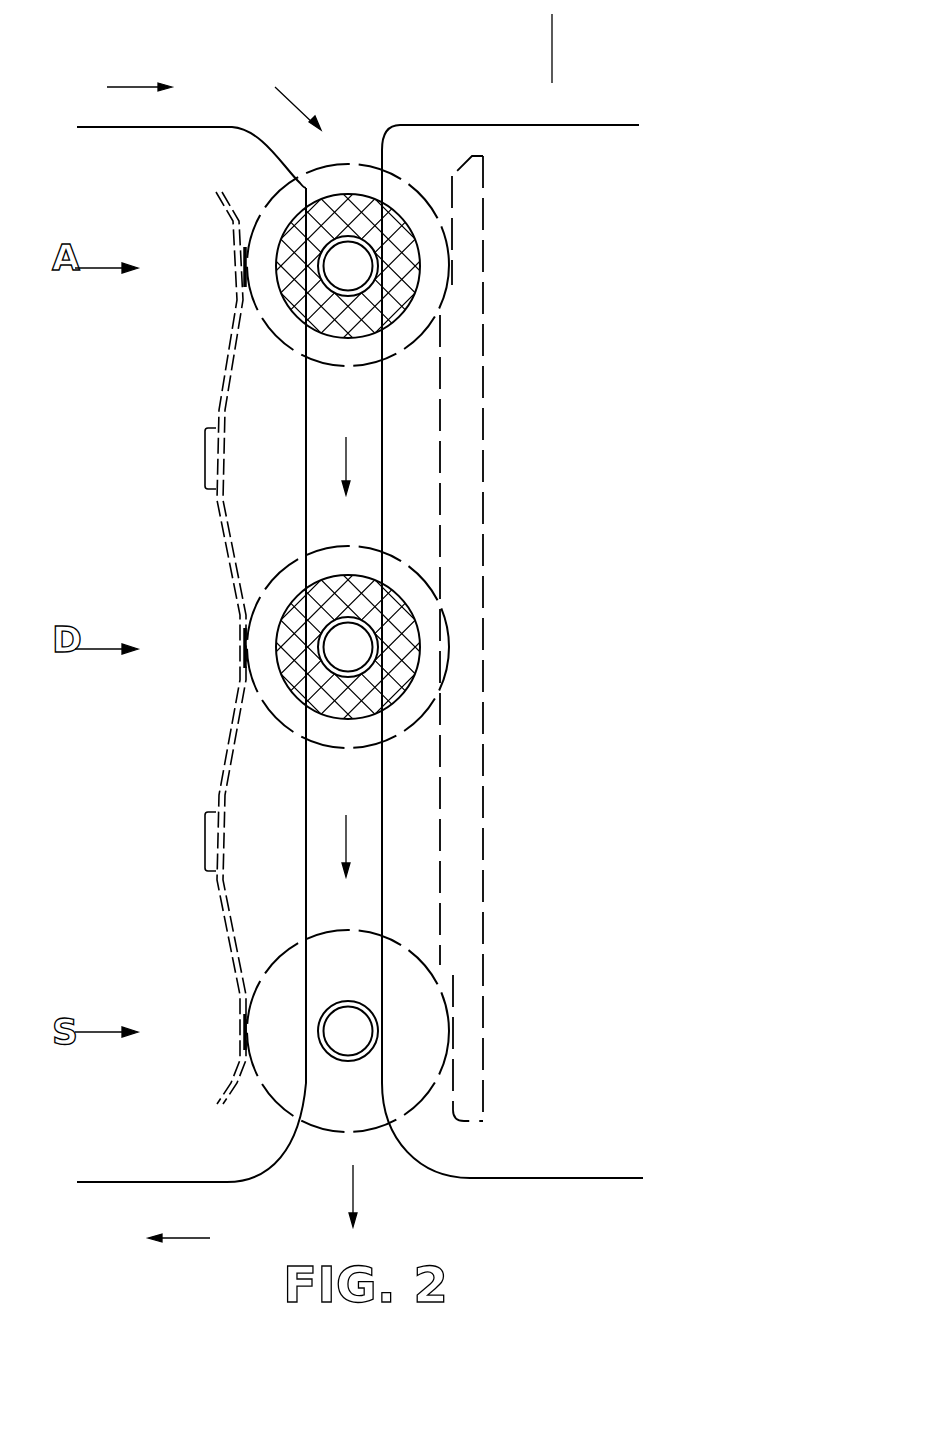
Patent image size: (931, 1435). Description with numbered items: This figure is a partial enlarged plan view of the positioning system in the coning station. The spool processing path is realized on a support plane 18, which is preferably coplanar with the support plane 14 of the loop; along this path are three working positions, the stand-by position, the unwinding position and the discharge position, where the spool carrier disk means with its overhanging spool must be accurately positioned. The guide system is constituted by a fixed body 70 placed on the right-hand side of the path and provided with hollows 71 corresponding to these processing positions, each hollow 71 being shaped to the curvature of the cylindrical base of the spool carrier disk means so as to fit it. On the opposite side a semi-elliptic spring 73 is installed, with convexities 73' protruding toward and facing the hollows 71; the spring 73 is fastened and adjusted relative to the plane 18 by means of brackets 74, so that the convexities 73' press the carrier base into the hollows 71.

The support plane 14 is at (570, 41).
The support plane 18 is at (344, 688).
The fixed body 70 is at (458, 517).
The hollows 71 is at (531, 1031).
The semi-elliptic spring 73 is at (179, 648).
The convexities 73' is at (170, 674).
The brackets 74 is at (205, 840).